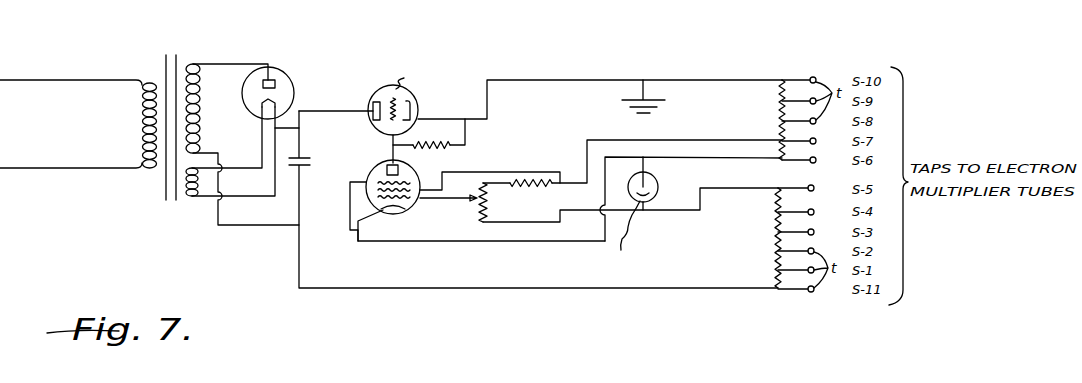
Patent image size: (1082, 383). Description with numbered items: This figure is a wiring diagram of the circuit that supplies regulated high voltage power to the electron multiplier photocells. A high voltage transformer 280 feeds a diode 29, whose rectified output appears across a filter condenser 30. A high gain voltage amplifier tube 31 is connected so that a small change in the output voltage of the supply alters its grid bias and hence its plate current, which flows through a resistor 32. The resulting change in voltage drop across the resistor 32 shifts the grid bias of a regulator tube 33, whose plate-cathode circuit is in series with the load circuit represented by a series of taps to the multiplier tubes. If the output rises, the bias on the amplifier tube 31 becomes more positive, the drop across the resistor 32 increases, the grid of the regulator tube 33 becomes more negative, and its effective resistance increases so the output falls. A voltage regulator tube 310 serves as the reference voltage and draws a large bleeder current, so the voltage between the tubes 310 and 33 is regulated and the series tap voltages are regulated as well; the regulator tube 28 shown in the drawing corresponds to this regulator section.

The high voltage transformer 280 is at (166, 60).
The diode 29 is at (289, 54).
The filter condenser 30 is at (309, 167).
The regulator tube 28 is at (412, 58).
The regulator tube 33 is at (395, 77).
The resistor 32 is at (429, 143).
The high gain voltage amplifier tube 31 is at (372, 163).
The reference voltage tube 310 is at (656, 177).